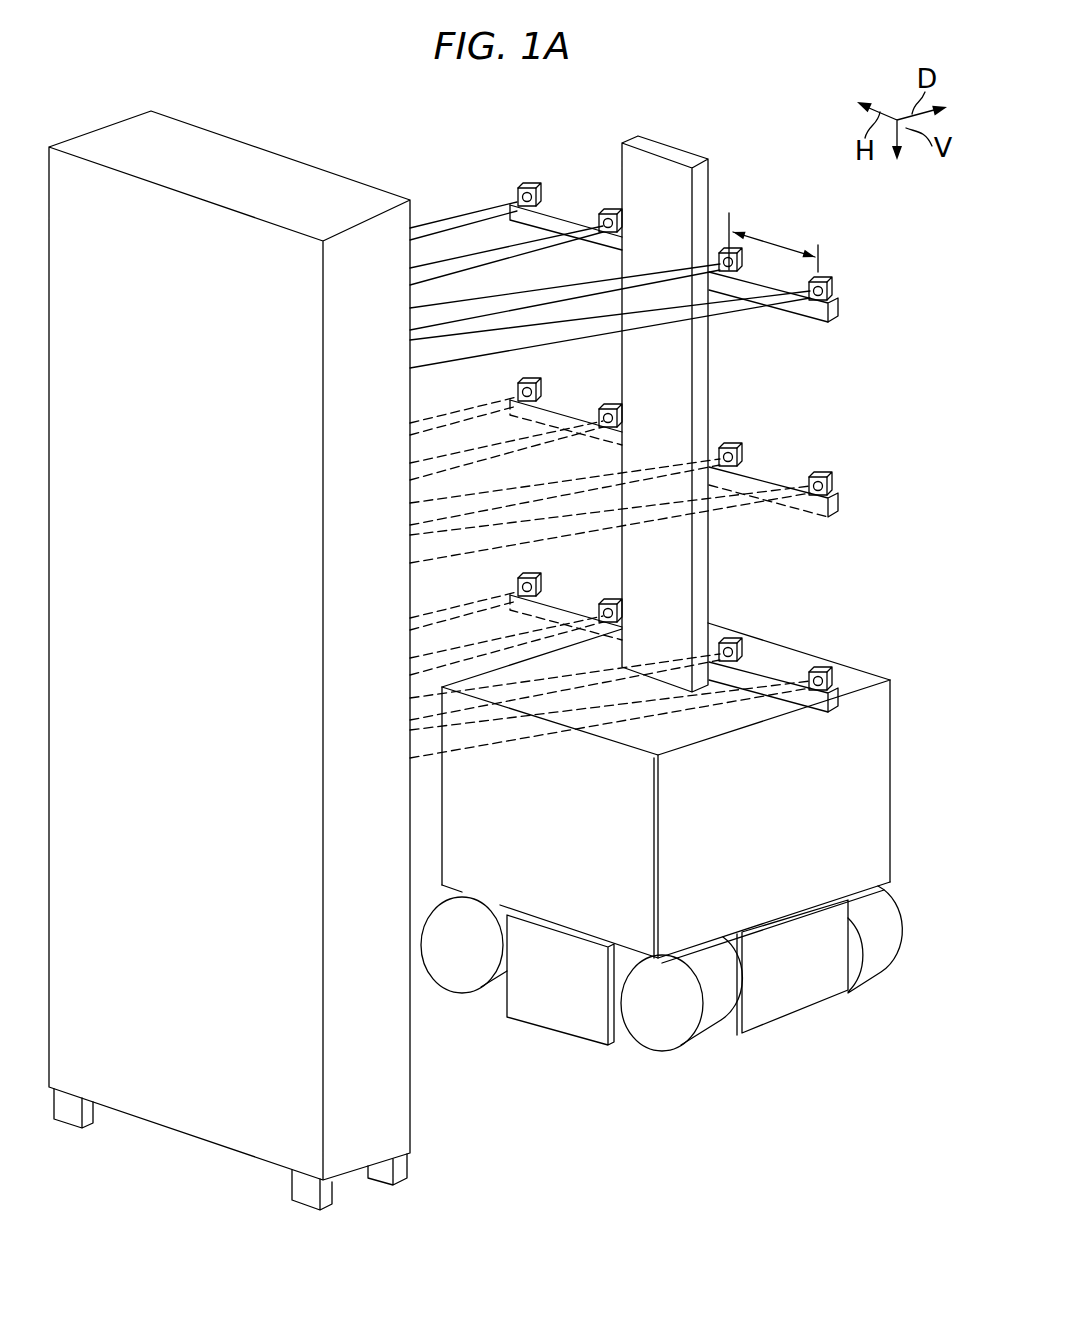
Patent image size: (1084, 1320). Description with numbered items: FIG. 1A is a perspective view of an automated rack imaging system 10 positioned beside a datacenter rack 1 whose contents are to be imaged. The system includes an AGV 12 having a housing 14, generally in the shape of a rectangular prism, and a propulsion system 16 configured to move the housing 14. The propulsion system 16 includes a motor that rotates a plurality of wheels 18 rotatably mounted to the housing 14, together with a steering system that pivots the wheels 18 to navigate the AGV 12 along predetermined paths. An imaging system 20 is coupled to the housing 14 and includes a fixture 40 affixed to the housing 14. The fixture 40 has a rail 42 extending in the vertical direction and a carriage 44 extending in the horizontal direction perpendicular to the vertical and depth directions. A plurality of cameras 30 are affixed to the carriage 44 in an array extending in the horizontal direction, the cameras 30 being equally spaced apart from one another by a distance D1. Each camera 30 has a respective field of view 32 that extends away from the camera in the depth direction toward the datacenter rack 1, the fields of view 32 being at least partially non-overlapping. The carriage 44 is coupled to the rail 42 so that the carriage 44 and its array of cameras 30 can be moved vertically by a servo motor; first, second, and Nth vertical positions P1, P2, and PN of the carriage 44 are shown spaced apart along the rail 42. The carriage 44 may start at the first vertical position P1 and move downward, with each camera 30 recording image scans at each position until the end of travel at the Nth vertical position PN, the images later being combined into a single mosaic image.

The datacenter rack 1 is at (227, 134).
The automated rack imaging system 10 is at (588, 429).
The AGV 12 is at (663, 853).
The housing 14 is at (776, 642).
The propulsion system 16 is at (796, 1016).
The wheels 18 is at (700, 1051).
The imaging system 20 is at (780, 447).
The cameras 30 is at (533, 188).
The field of view 32 is at (437, 215).
The fixture 40 is at (581, 201).
The rail 42 is at (709, 190).
The carriage 44 is at (812, 322).
The first vertical position P1 is at (809, 314).
The second vertical position P2 is at (840, 503).
The Nth vertical position PN is at (840, 706).
The distance D1 is at (777, 245).